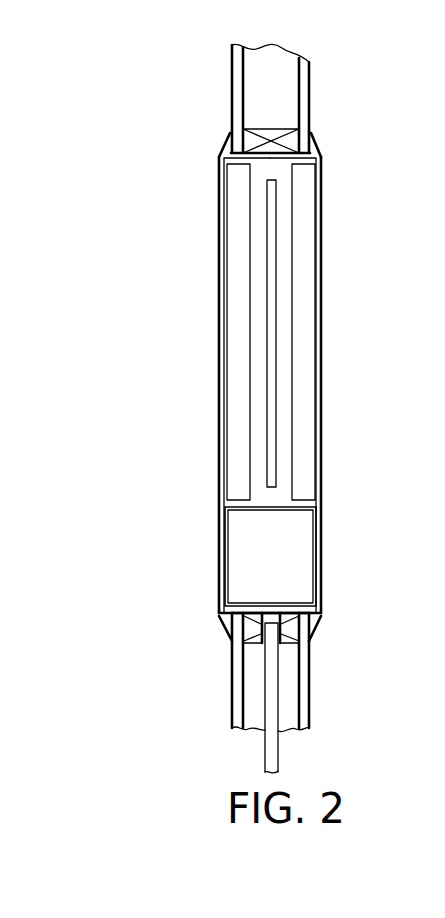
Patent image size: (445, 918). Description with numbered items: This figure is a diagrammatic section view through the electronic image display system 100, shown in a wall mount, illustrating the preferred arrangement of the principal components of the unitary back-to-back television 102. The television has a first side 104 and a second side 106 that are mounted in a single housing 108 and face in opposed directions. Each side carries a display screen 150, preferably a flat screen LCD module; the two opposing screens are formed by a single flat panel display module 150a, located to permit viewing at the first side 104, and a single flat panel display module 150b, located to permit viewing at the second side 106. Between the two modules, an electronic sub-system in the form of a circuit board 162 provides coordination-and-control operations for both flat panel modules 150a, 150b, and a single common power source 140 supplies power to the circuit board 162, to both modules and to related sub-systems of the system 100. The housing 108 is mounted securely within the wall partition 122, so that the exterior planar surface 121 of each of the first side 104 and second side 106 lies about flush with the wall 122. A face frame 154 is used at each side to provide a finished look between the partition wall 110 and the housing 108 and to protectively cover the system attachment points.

The electronic image display system 100 is at (178, 779).
The unitary back-to-back television 102 is at (204, 529).
The first side 104 is at (225, 365).
The second side 106 is at (318, 362).
The housing 108 is at (237, 503).
The partition wall 110 is at (216, 55).
The exterior planar surface 121 is at (220, 425).
The wall partition 122 is at (232, 673).
The common power source 140 is at (290, 562).
The display screen 150 is at (238, 253).
The flat panel display module 150a is at (238, 306).
The flat panel display module 150b is at (303, 310).
The face frame 154 is at (219, 153).
The circuit board 162 is at (276, 463).